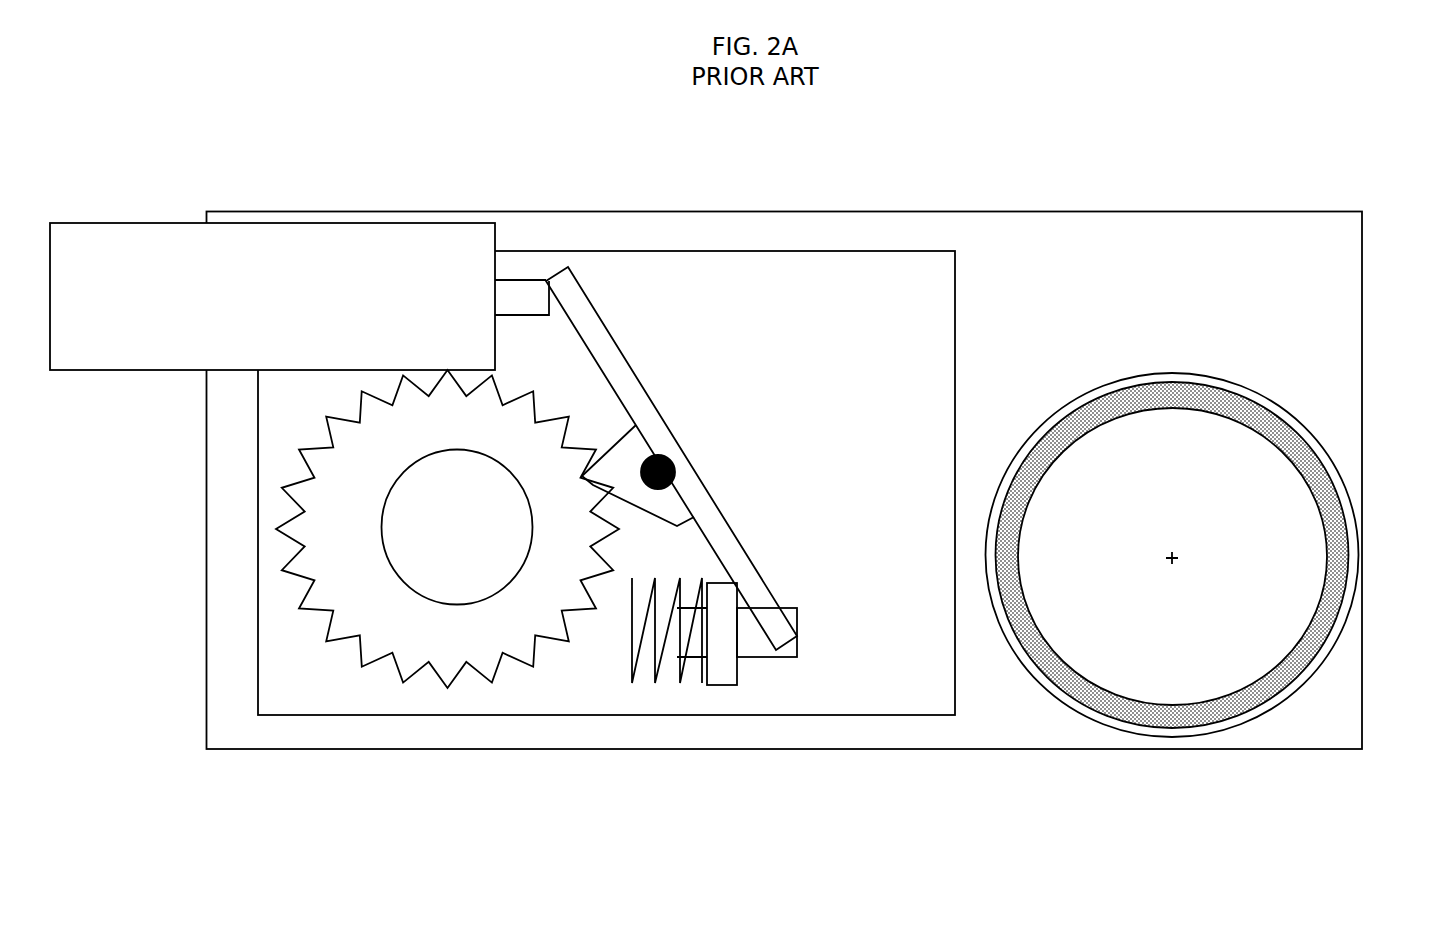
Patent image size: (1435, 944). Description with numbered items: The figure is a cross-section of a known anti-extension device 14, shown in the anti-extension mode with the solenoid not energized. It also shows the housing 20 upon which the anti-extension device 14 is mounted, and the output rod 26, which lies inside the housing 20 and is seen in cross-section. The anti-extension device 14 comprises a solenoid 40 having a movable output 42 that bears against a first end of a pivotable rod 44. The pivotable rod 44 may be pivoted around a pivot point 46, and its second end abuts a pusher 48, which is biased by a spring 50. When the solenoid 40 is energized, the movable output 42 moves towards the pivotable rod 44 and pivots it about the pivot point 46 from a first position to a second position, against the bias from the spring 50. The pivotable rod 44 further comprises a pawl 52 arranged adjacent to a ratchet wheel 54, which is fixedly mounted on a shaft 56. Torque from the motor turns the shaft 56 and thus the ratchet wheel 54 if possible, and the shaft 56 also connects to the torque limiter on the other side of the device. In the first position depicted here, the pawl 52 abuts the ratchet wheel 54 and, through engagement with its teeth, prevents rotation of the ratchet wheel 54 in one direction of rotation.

The anti-extension device 14 is at (790, 250).
The housing 20 is at (1190, 210).
The output rod 26 is at (1323, 627).
The solenoid 40 is at (247, 312).
The movable output 42 is at (520, 288).
The pivotable rod 44 is at (738, 540).
The pivot point 46 is at (676, 466).
The pusher 48 is at (752, 627).
The spring 50 is at (655, 677).
The pawl 52 is at (607, 447).
The ratchet wheel 54 is at (532, 597).
The shaft 56 is at (440, 547).